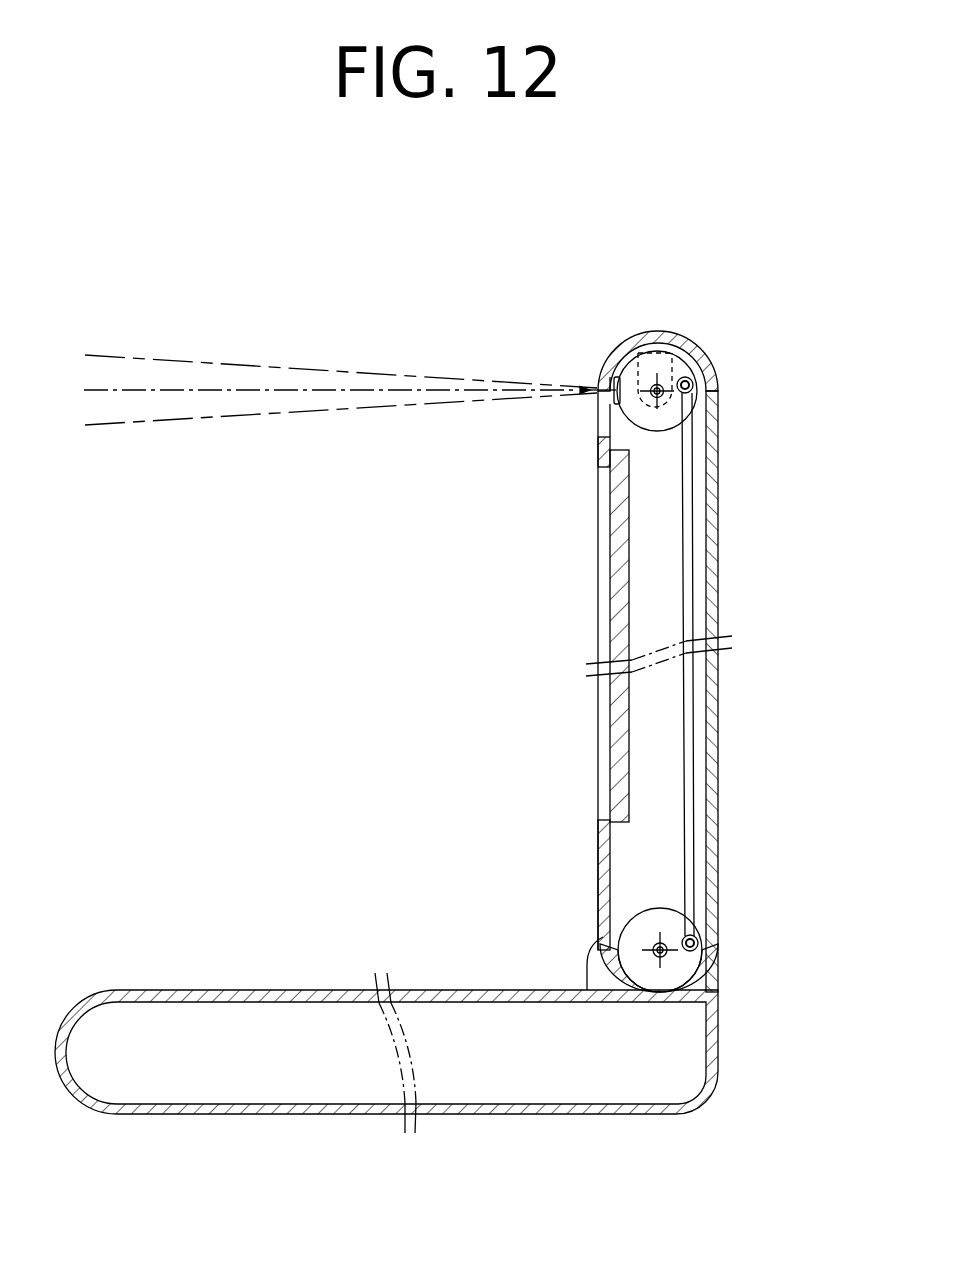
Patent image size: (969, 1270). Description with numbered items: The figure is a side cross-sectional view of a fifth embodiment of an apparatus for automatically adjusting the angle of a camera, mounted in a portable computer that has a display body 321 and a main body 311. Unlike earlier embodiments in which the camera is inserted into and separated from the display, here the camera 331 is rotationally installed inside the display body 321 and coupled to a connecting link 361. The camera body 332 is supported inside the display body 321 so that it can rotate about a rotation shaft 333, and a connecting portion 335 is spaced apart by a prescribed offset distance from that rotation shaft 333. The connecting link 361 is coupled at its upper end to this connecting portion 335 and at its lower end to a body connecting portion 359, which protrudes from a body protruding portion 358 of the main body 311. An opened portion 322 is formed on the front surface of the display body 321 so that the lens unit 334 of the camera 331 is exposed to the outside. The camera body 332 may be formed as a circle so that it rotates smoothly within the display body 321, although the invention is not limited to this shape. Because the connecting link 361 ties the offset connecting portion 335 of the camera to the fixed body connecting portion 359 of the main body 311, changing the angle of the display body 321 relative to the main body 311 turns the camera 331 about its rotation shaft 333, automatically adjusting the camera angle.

The main body 311 is at (209, 988).
The display body 321 is at (722, 773).
The opened portion 322 is at (603, 416).
The camera 331 is at (684, 351).
The camera body 332 is at (621, 353).
The rotation shaft 333 is at (655, 388).
The lens unit 334 is at (608, 383).
The connecting portion 335 is at (695, 368).
The body protruding portion 358 is at (655, 922).
The body connecting portion 359 is at (698, 937).
The connecting link 361 is at (692, 553).